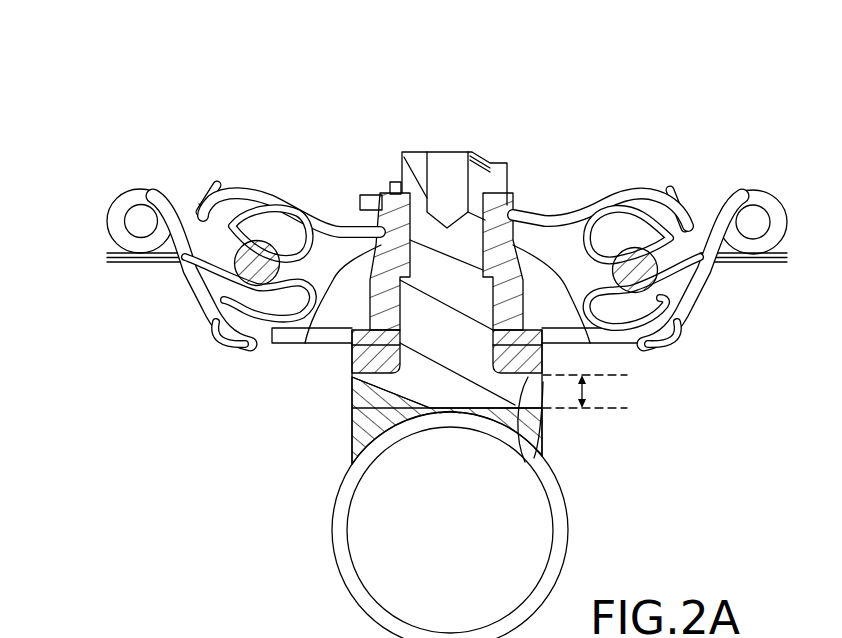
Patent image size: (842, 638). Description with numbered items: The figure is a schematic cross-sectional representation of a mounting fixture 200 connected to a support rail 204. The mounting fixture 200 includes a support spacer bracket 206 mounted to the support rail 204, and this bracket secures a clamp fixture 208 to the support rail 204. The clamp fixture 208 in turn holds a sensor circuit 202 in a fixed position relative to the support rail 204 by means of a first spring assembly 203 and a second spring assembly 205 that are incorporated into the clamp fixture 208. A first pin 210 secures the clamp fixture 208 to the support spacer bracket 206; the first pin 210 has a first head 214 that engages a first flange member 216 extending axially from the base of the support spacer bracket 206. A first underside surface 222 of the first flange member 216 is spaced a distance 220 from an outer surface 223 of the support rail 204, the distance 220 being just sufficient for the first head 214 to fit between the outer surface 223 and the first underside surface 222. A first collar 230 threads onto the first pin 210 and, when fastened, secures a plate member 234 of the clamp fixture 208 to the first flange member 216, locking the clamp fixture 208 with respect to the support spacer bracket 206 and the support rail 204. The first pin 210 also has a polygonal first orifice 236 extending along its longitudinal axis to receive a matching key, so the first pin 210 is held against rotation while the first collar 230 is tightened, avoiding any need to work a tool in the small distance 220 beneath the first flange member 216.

The mounting fixture 200 is at (120, 80).
The sensor circuit 202 is at (256, 258).
The first spring assembly 203 is at (197, 223).
The support rail 204 is at (556, 517).
The second spring assembly 205 is at (697, 238).
The support spacer bracket 206 is at (365, 425).
The clamp fixture 208 is at (546, 162).
The first pin 210 is at (508, 193).
The first head 214 is at (365, 388).
The first flange member 216 is at (363, 358).
The distance 220 is at (597, 392).
The first underside surface 222 is at (522, 415).
The outer surface 223 is at (452, 415).
The first collar 230 is at (384, 195).
The plate member 234 is at (272, 338).
The first orifice 236 is at (447, 152).